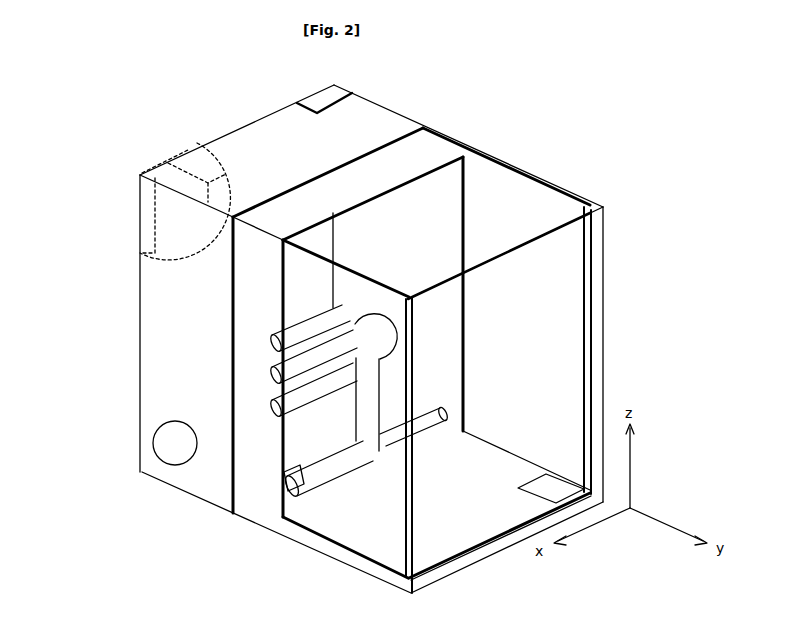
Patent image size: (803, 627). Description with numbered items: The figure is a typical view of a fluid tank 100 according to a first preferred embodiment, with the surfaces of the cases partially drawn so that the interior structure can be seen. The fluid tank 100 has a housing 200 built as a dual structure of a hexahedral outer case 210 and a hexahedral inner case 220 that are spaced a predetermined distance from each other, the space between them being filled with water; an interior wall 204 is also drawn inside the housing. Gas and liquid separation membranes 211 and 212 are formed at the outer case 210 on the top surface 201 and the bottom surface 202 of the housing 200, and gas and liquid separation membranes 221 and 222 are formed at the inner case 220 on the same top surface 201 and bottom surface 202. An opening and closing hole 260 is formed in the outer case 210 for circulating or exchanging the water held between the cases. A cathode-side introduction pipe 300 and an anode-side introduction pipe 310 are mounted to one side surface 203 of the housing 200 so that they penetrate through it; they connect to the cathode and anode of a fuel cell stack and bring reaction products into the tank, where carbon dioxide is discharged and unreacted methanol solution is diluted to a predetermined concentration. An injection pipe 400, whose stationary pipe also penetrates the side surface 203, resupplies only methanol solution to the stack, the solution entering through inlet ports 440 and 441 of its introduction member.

The fluid tank 100 is at (80, 64).
The housing 200 is at (530, 143).
The top surface 201 is at (269, 124).
The bottom surface 202 is at (476, 447).
The one side surface 203 is at (157, 338).
The partition wall 204 is at (476, 227).
The outer case 210 is at (603, 325).
The gas and liquid separation membrane 211 is at (352, 91).
The gas and liquid separation membrane 212 is at (447, 570).
The inner case 220 is at (595, 285).
The gas and liquid separation membrane 221 is at (168, 175).
The gas and liquid separation membrane 222 is at (528, 498).
The opening and closing hole 260 is at (172, 447).
The cathode-side introduction pipe 300 is at (272, 340).
The anode-side introduction pipe 310 is at (266, 400).
The injection pipe 400 is at (398, 357).
The inlet port 440 is at (287, 478).
The inlet port 441 is at (450, 407).